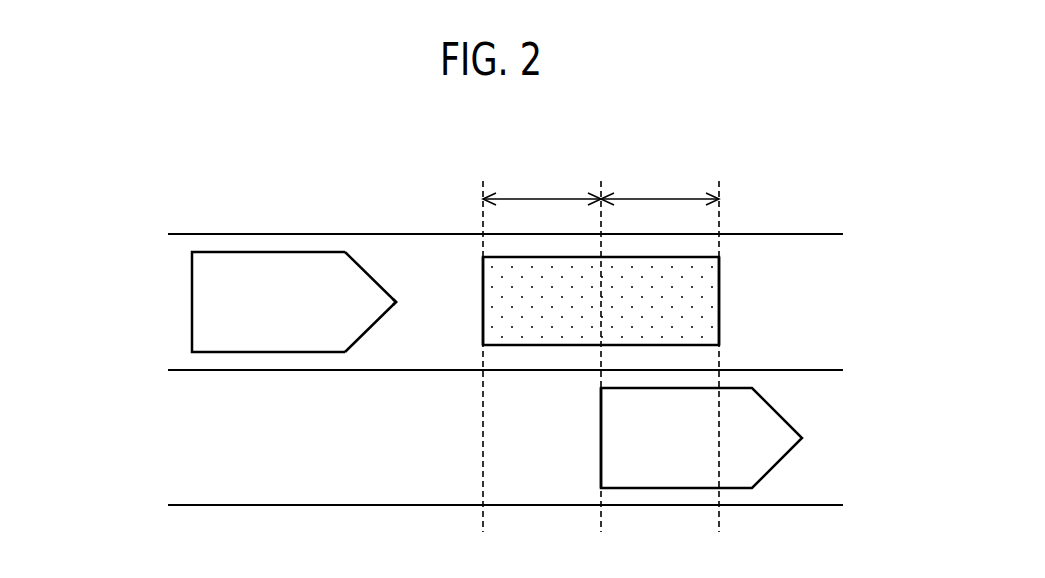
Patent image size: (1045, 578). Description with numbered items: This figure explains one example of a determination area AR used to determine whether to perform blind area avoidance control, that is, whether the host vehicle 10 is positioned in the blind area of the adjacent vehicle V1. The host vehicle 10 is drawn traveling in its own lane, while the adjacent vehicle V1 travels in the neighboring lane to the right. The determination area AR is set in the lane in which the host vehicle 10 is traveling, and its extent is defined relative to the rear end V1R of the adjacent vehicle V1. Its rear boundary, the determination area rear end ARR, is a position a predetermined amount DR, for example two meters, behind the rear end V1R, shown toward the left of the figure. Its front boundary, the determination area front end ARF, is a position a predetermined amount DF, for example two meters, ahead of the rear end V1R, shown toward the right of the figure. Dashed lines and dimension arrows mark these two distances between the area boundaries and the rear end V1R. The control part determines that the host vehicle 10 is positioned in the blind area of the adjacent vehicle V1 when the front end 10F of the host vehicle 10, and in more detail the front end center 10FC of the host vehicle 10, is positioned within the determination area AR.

The host vehicle 10 is at (192, 302).
The front end of host vehicle 10F is at (382, 328).
The front end center of host vehicle 10FC is at (396, 302).
The determination area AR is at (618, 314).
The determination area rear end ARR is at (483, 280).
The determination area front end ARF is at (719, 302).
The predetermined amount DR is at (542, 185).
The predetermined amount DF is at (660, 185).
The adjacent vehicle V1 is at (785, 418).
The rear end of adjacent vehicle V1R is at (601, 441).